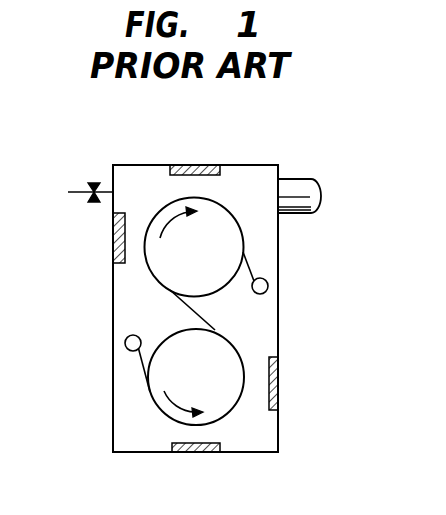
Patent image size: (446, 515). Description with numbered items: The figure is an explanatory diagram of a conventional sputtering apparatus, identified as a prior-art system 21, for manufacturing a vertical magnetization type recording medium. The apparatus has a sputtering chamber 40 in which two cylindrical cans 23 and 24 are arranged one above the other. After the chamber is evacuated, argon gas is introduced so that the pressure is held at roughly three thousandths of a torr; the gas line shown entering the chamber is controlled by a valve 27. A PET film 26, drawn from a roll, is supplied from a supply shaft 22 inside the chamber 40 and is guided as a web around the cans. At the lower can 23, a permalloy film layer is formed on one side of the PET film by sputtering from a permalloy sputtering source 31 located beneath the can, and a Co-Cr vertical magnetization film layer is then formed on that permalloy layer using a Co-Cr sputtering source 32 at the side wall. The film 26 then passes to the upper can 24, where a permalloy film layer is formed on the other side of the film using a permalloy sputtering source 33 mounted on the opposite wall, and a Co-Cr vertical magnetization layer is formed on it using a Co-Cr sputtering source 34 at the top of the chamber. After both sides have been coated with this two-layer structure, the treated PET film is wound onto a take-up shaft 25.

The processing apparatus housing 21 is at (264, 163).
The supply shaft 22 is at (137, 335).
The cylindrical can 23 is at (237, 400).
The cylindrical can 24 is at (227, 215).
The take-up shaft 25 is at (260, 278).
The web 26 is at (298, 178).
The valve 27 is at (94, 182).
The permalloy sputtering source 31 is at (206, 454).
The Co-Cr sputtering source 32 is at (280, 372).
The permalloy sputtering source 33 is at (113, 242).
The Co-Cr sputtering source 34 is at (190, 165).
The sputtering chamber 40 is at (113, 300).